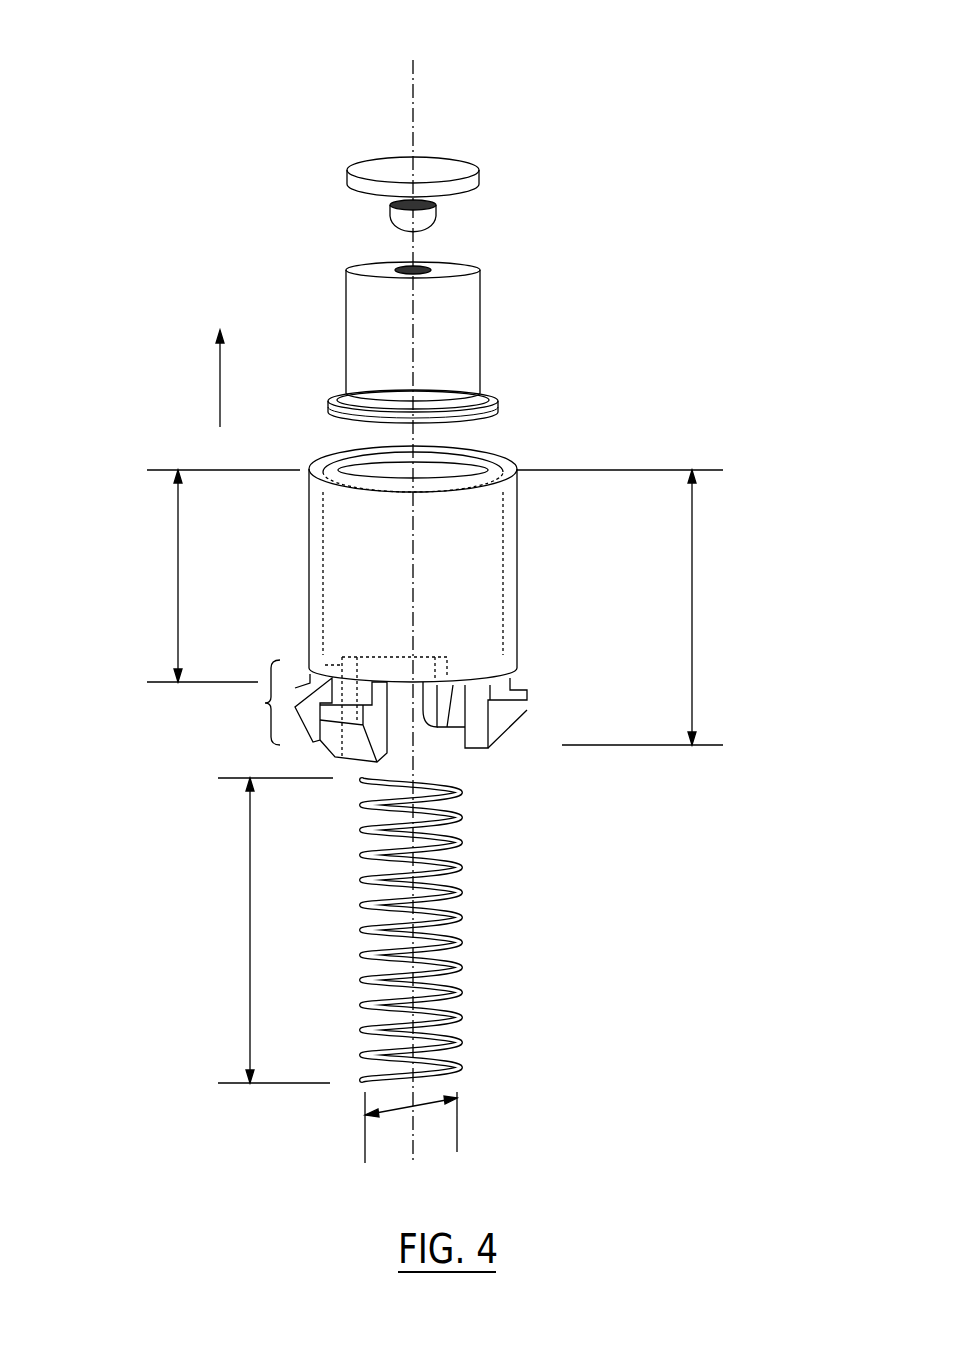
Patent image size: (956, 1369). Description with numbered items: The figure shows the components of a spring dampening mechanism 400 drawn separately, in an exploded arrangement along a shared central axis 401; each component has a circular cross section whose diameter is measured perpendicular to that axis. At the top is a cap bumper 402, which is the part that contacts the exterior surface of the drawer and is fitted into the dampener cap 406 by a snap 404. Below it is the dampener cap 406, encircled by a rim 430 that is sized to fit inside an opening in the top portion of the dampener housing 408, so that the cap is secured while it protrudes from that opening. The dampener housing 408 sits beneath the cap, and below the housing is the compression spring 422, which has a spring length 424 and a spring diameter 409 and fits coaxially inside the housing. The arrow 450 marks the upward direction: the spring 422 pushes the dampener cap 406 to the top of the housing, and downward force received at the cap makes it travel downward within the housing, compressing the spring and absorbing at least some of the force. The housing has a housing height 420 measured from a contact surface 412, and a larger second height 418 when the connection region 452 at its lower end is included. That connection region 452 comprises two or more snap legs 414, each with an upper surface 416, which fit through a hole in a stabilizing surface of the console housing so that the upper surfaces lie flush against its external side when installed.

The spring dampening mechanism 400 is at (670, 401).
The central axis 401 is at (413, 108).
The cap bumper 402 is at (479, 178).
The snap 404 is at (433, 223).
The dampener cap 406 is at (480, 318).
The dampener housing 408 is at (308, 556).
The spring diameter 409 is at (433, 1107).
The contact surface 412 is at (425, 703).
The snap legs 414 is at (386, 156).
The upper surface 416 is at (520, 680).
The second height 418 is at (692, 602).
The housing height 420 is at (178, 592).
The compression spring 422 is at (360, 874).
The spring length 424 is at (250, 947).
The rim 430 is at (496, 398).
The arrow 450 is at (220, 366).
The connection region 452 is at (247, 702).